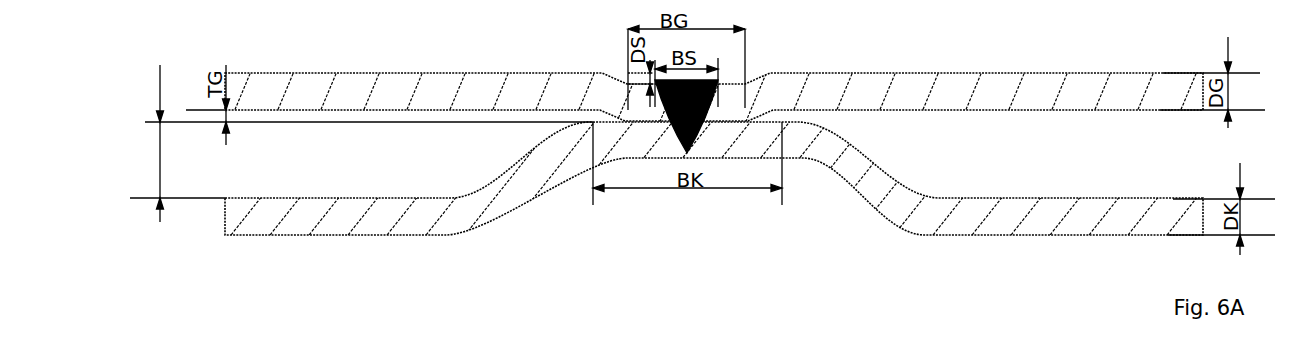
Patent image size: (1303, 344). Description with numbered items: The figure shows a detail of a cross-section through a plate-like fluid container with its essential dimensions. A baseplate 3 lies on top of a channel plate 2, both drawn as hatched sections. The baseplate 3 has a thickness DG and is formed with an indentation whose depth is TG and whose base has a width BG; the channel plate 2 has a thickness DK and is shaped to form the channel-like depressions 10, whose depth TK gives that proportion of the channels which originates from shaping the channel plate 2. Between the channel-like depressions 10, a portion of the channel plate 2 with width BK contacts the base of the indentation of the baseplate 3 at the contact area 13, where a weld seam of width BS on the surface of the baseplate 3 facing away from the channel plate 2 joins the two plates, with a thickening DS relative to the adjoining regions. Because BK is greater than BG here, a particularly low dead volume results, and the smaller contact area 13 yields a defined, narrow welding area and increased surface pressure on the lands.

The channel plate 2 is at (1095, 228).
The baseplate 3 is at (1097, 83).
The channel-like depressions 10 is at (344, 176).
The contact area 13 is at (652, 123).